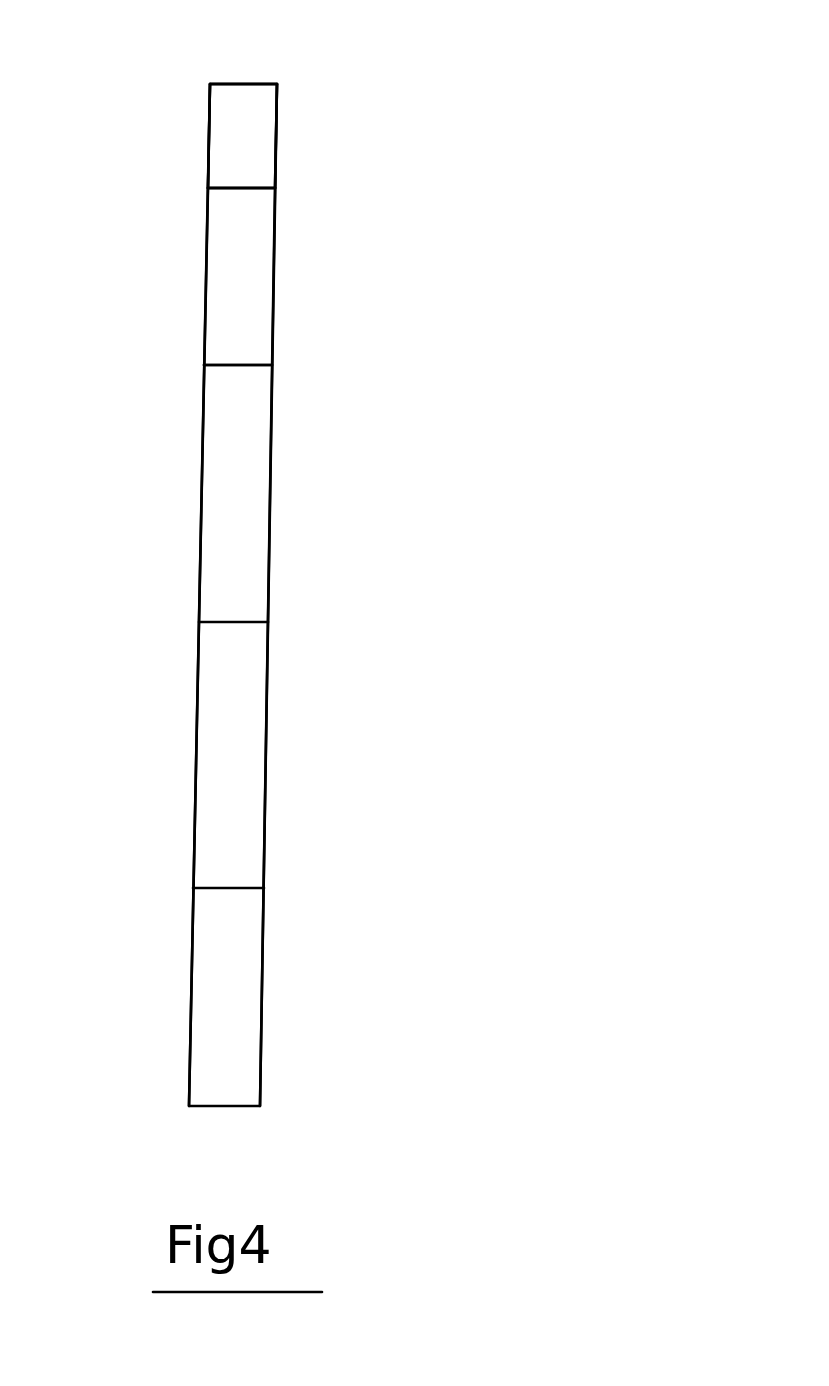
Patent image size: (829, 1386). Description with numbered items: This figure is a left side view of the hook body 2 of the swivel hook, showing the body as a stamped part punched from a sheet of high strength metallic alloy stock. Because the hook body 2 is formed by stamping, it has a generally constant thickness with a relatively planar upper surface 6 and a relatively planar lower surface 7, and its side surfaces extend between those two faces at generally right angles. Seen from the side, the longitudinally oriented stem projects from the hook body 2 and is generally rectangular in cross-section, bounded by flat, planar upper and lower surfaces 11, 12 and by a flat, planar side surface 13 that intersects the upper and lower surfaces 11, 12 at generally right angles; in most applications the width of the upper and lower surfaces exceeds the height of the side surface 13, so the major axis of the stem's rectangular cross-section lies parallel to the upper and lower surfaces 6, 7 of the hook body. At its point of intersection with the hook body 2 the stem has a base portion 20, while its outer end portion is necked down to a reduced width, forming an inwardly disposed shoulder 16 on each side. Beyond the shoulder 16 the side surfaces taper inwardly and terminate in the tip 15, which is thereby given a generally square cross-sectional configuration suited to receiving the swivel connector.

The hook body 2 is at (230, 803).
The upper surface 6 is at (272, 497).
The lower surface 7 is at (202, 535).
The upper surface of stem 11 is at (277, 134).
The lower surface of stem 12 is at (210, 107).
The side surface of stem 13 is at (260, 157).
The tip 15 is at (262, 82).
The shoulder 16 is at (253, 190).
The base portion 20 is at (270, 363).